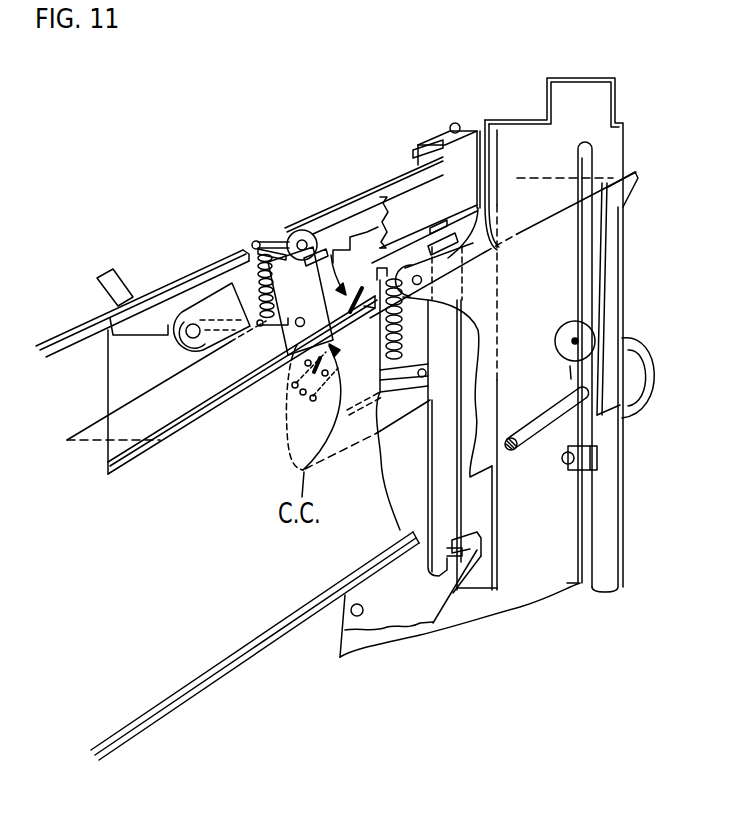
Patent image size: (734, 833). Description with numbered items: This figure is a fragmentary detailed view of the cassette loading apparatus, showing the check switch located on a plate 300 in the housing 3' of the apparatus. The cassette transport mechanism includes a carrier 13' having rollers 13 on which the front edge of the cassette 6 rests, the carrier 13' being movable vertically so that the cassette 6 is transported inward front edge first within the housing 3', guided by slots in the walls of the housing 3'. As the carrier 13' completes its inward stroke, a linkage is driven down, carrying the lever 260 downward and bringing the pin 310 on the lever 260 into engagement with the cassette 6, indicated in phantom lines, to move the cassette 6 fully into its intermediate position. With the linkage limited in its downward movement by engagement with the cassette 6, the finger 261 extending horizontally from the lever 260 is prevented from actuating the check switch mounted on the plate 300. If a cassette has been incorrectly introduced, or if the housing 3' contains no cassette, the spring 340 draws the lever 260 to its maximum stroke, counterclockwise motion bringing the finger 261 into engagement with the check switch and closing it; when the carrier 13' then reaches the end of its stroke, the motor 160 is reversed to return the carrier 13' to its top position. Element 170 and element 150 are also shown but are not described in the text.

The housing 3' is at (489, 367).
The plate 300 is at (184, 667).
The cassette 6 is at (222, 410).
The spring 340 is at (230, 297).
The pin 310 is at (188, 350).
The finger 261 is at (312, 226).
The lever 260 is at (348, 203).
The rollers 13 is at (565, 316).
The pin 170 is at (568, 374).
The rod 150 is at (534, 432).
The carrier 13' is at (621, 471).
The motor MD 160 is at (645, 392).